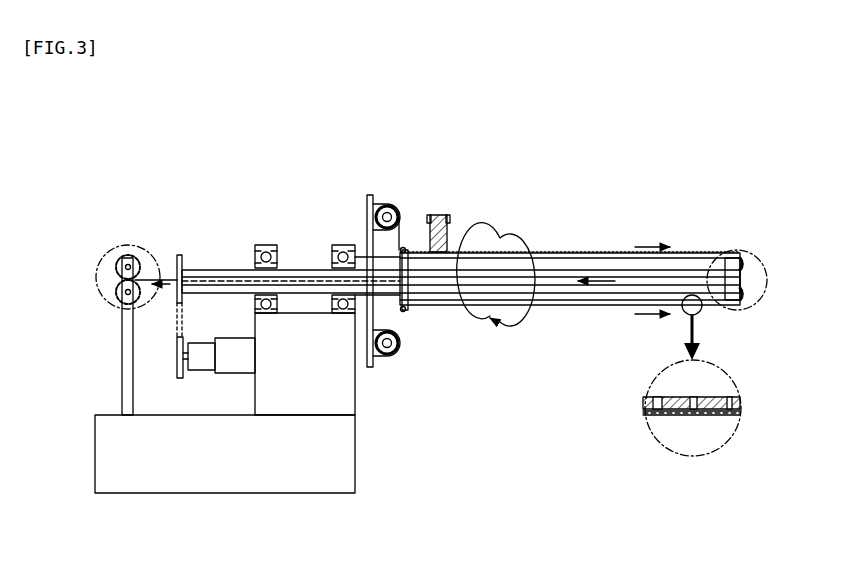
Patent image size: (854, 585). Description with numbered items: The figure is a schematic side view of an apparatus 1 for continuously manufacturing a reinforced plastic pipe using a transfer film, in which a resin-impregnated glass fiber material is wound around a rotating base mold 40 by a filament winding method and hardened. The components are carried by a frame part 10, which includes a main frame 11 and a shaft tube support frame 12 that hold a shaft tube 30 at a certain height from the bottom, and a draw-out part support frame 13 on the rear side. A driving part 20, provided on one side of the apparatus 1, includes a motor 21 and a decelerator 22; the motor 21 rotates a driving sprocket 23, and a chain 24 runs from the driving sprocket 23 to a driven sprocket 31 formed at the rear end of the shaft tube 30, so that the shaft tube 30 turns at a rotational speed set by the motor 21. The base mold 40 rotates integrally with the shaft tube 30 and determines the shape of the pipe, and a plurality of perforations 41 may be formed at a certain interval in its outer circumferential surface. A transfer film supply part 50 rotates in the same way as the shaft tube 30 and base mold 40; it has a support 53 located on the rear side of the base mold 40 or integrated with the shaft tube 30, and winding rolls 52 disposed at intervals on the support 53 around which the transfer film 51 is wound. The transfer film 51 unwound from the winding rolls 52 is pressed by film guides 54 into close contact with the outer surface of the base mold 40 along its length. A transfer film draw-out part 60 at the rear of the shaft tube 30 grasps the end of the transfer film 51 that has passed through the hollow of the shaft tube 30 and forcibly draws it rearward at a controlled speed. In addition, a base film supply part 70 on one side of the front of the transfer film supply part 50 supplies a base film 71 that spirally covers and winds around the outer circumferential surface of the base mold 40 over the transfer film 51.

The apparatus for continuously manufacturing a reinforced plastic pipe 1 is at (146, 146).
The frame part 10 is at (358, 447).
The main frame 11 is at (347, 395).
The shaft tube support frame 12 is at (267, 245).
The draw-out part support frame 13 is at (128, 389).
The driving part 20 is at (184, 441).
The motor 21 is at (237, 373).
The decelerator 22 is at (197, 372).
The driving sprocket 23 is at (176, 362).
The chain 24 is at (177, 328).
The shaft tube 30 is at (243, 270).
The driven sprocket 31 is at (177, 257).
The base mold 40 is at (562, 248).
The perforations 41 is at (655, 397).
The transfer film supply part 50 is at (380, 256).
The transfer film 51 is at (118, 300).
The winding rolls 52 is at (380, 210).
The support 53 is at (366, 232).
The film guides 54 is at (404, 248).
The transfer film draw-out part 60 is at (106, 266).
The base film supply part 70 is at (484, 243).
The base film 71 is at (462, 228).